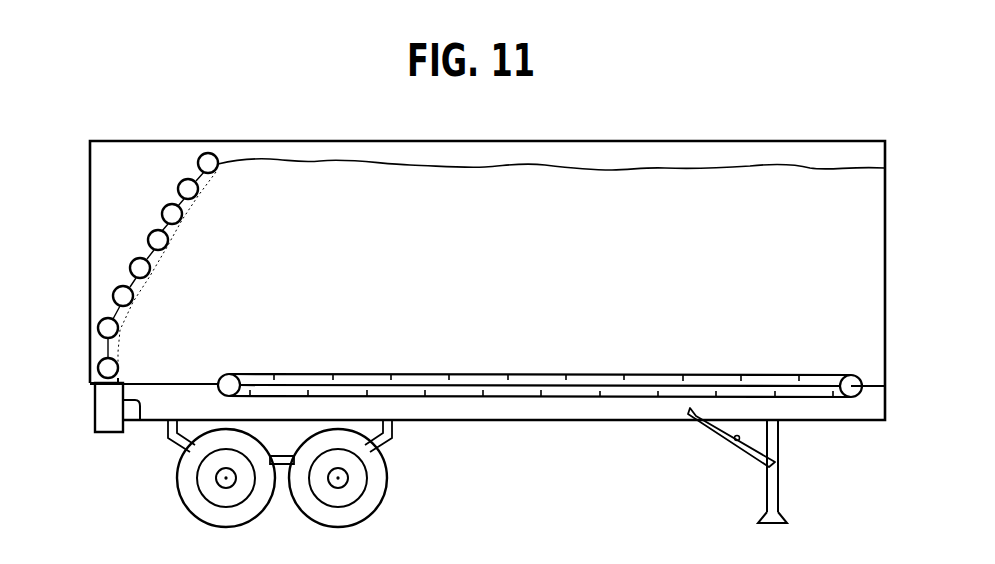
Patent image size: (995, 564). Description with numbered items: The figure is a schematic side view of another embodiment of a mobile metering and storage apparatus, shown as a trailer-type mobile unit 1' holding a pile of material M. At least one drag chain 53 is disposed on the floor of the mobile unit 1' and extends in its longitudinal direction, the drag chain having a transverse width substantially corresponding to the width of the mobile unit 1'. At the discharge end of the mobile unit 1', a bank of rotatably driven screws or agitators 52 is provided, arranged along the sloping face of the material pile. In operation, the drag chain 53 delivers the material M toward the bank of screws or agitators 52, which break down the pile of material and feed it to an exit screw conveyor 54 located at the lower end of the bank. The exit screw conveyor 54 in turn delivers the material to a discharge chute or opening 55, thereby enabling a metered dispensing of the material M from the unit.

The mobile unit 1' is at (487, 311).
The material M is at (612, 171).
The bank of rotatably driven screws or agitators 52 is at (145, 230).
The drag chain 53 is at (489, 373).
The exit screw conveyor 54 is at (95, 377).
The discharge chute or opening 55 is at (137, 420).